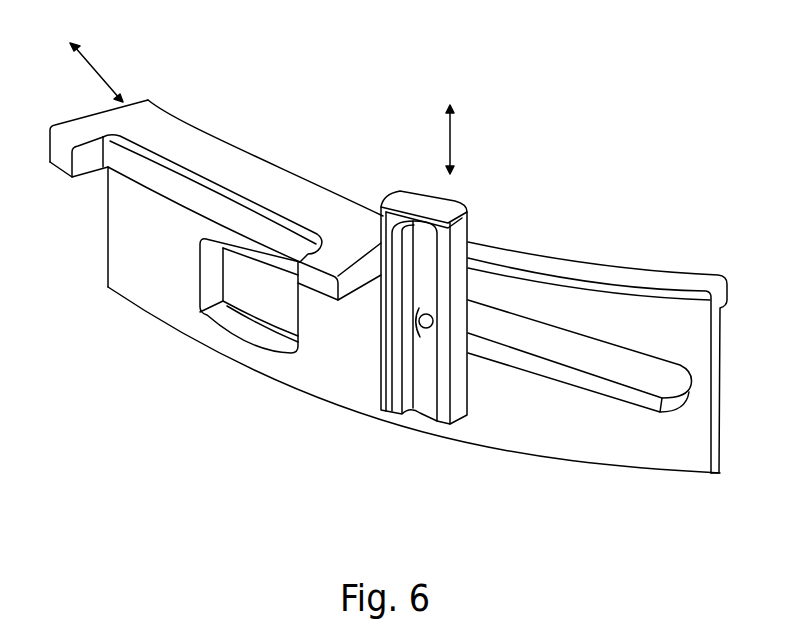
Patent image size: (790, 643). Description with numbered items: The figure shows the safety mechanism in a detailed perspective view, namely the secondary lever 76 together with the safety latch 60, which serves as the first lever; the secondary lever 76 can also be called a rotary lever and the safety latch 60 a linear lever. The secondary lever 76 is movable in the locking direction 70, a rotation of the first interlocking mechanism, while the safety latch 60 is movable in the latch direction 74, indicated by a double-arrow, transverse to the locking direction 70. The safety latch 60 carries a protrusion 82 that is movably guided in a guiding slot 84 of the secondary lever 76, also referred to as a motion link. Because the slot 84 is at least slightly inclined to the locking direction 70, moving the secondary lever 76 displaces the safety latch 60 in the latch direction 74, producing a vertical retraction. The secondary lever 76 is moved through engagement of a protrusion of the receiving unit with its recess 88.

The safety latch 60 is at (429, 198).
The locking direction 70 is at (88, 62).
The latch direction 74 is at (450, 140).
The secondary lever 76 is at (265, 180).
The protrusion 82 is at (483, 315).
The guiding slot 84 is at (573, 350).
The recess 88 is at (182, 192).